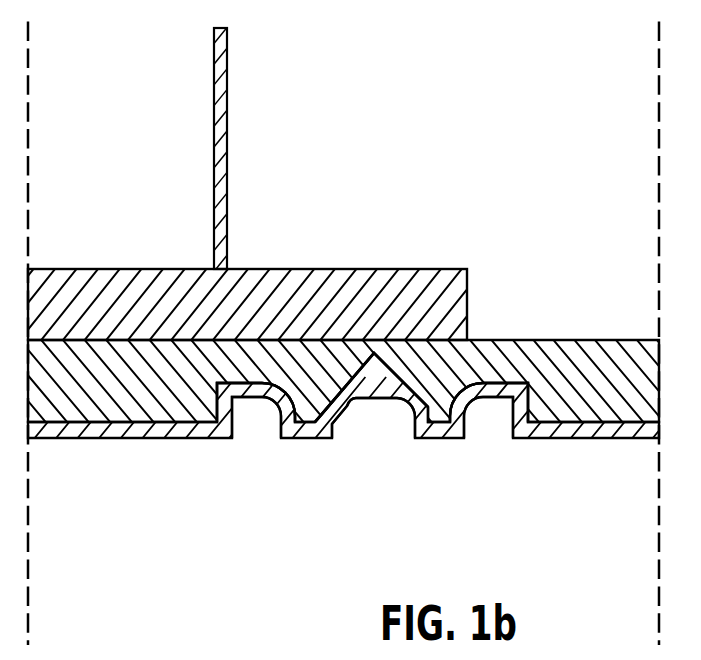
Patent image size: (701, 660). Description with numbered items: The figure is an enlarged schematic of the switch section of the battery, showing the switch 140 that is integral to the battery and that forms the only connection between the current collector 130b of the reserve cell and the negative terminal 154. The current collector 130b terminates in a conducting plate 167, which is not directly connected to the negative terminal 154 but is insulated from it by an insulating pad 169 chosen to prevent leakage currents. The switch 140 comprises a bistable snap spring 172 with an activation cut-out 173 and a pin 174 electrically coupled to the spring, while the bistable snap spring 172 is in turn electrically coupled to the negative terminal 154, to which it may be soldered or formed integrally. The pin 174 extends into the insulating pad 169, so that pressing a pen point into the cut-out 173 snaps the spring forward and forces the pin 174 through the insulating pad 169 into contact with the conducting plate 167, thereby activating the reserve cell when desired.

The current collector 130b is at (228, 137).
The conducting plate 167 is at (415, 270).
The insulating pad 169 is at (510, 353).
The negative terminal 154 is at (113, 438).
The bistable snap spring 172 is at (297, 438).
The activation cut-out 173 is at (386, 410).
The pin 174 is at (470, 437).
The switch 140 is at (351, 455).